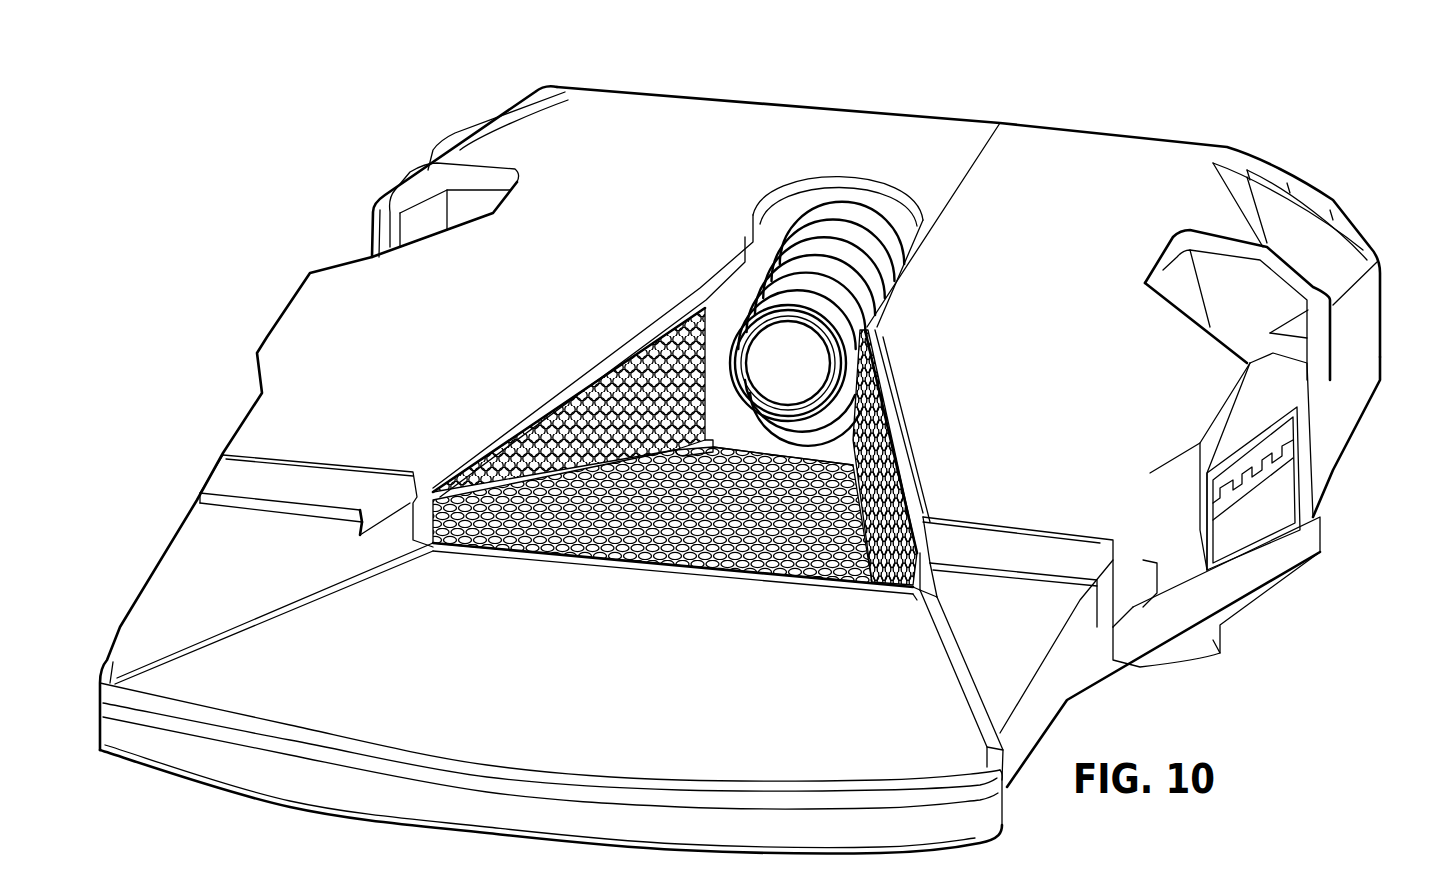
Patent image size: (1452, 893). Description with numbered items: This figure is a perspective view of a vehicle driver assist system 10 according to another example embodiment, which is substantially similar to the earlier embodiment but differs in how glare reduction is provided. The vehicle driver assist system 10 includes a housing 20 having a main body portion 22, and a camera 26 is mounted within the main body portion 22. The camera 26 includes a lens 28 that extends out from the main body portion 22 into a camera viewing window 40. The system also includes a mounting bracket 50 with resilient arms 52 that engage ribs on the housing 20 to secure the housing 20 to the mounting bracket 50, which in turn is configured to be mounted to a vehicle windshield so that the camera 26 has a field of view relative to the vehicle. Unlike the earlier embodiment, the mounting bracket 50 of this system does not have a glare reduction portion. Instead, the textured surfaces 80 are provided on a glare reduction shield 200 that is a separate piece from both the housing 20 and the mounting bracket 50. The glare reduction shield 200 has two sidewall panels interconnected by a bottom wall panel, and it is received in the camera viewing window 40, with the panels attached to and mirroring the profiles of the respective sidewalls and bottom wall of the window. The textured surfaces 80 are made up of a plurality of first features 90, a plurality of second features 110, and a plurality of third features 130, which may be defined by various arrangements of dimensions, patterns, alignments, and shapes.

The vehicle driver assist system 10 is at (740, 469).
The housing 20 is at (1273, 343).
The main body portion 22 is at (1307, 497).
The camera 26 is at (840, 300).
The lens 28 is at (787, 343).
The camera viewing window 40 is at (882, 174).
The mounting bracket 50 is at (1080, 157).
The resilient arms 52 is at (1297, 238).
The textured surfaces 80 is at (835, 588).
The plurality of first features 90 is at (523, 543).
The plurality of second features 110 is at (550, 537).
The plurality of third features 130 is at (600, 550).
The glare reduction shield 200 is at (902, 446).